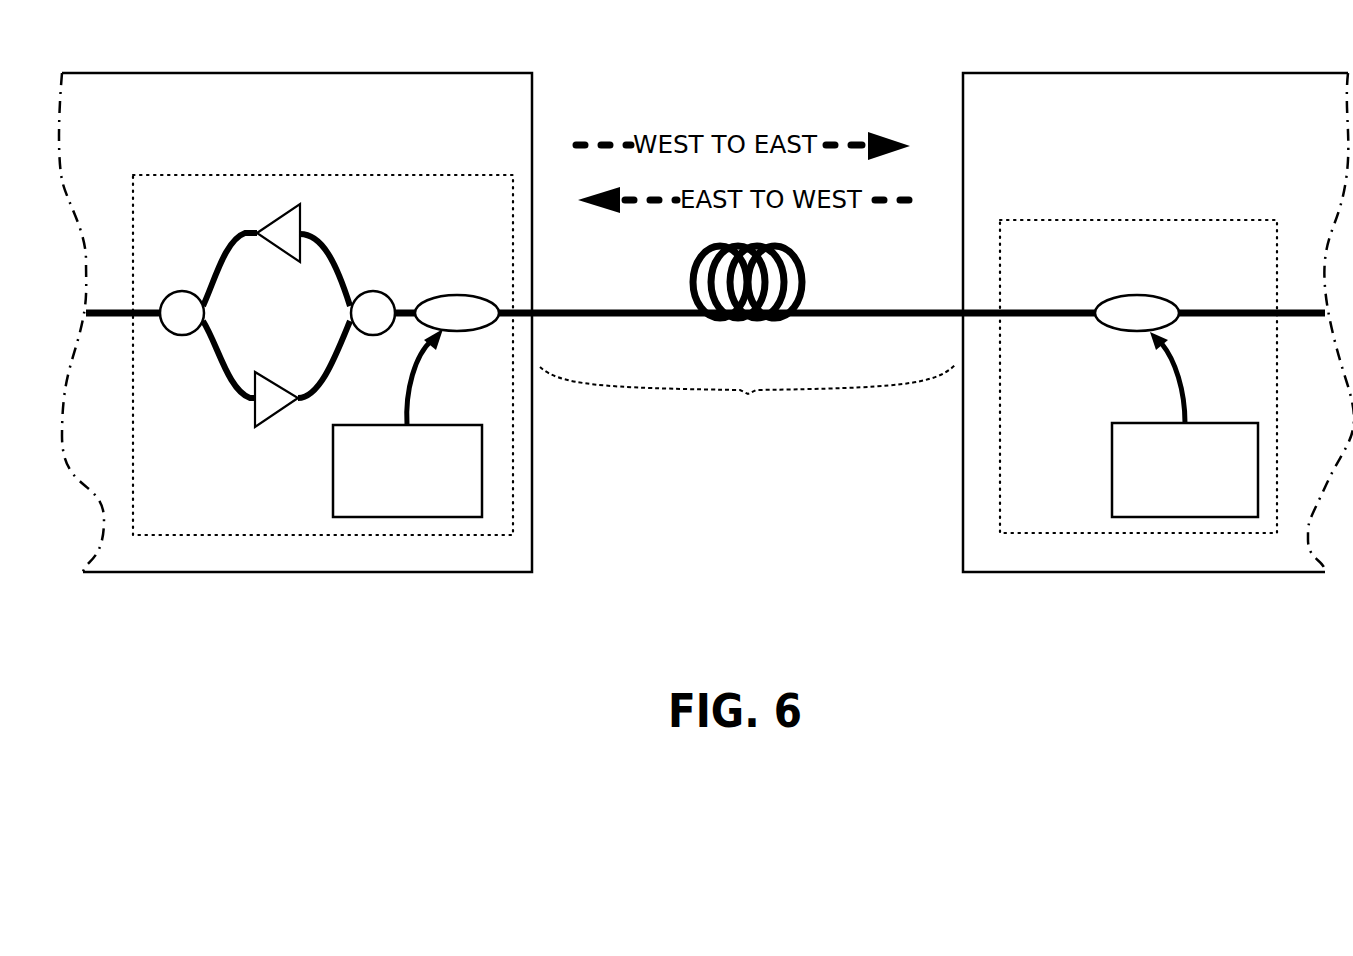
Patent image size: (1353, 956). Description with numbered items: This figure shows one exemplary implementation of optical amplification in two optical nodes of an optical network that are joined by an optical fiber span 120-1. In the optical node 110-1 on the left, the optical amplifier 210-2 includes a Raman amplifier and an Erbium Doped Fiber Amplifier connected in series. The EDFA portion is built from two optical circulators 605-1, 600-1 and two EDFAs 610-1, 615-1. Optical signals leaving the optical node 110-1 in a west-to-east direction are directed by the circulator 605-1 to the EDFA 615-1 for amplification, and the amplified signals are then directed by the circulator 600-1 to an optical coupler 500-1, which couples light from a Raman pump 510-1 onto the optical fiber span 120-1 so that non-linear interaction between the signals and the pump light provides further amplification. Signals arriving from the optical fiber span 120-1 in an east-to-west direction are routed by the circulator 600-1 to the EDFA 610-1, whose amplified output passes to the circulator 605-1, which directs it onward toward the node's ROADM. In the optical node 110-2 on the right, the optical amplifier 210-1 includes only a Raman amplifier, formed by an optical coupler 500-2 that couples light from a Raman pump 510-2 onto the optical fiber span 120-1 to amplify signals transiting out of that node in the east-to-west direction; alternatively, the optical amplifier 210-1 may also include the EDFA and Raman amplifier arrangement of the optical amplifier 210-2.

The optical node 110-1 is at (289, 73).
The optical node 110-2 is at (1168, 73).
The optical amplifier 210-1 is at (1133, 220).
The optical amplifier 210-2 is at (316, 175).
The EDFA 610-1 is at (283, 213).
The EDFA 615-1 is at (293, 437).
The optical circulator 605-1 is at (160, 300).
The optical circulator 600-1 is at (395, 300).
The optical coupler 500-1 is at (496, 300).
The optical coupler 500-2 is at (1097, 303).
The Raman pump 510-1 is at (487, 468).
The Raman pump 510-2 is at (1110, 478).
The optical fiber span 120-1 is at (748, 433).